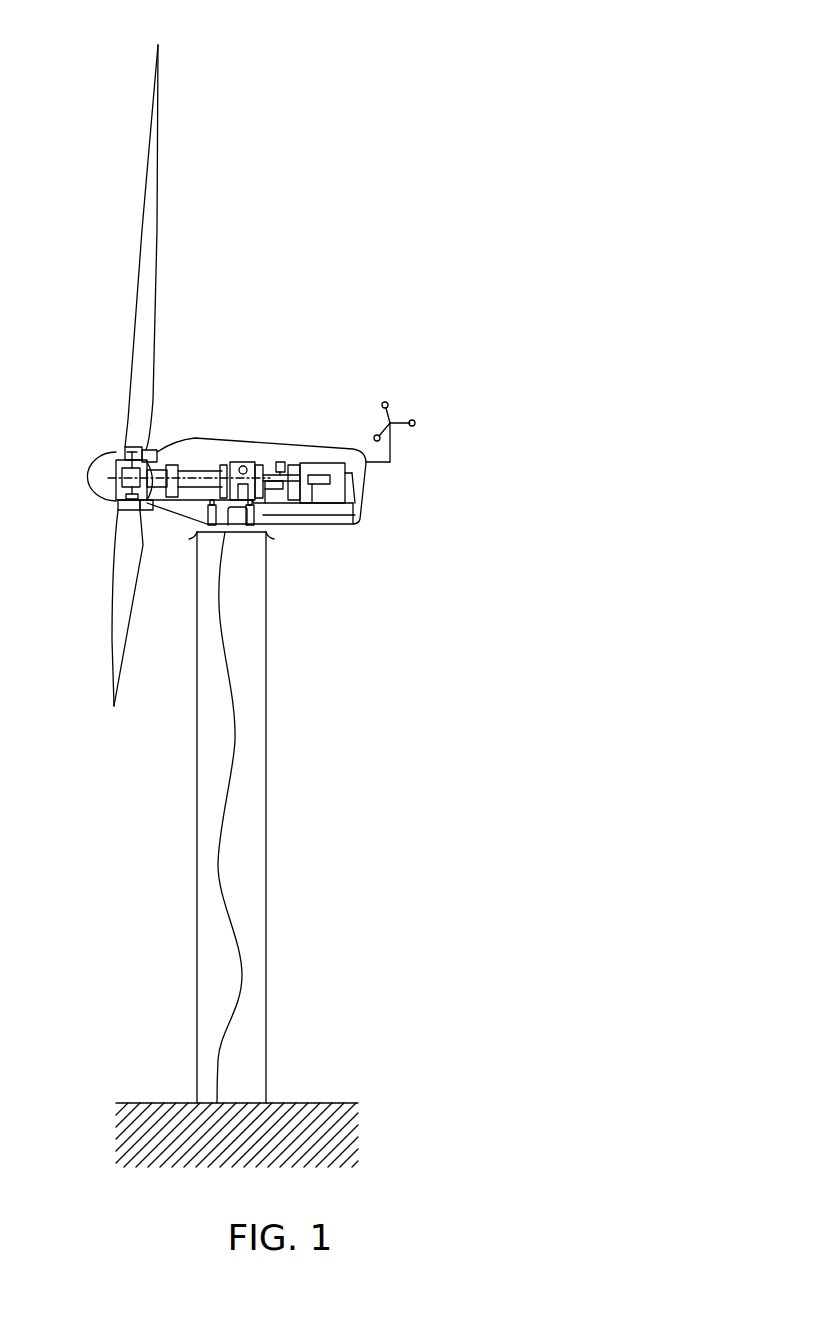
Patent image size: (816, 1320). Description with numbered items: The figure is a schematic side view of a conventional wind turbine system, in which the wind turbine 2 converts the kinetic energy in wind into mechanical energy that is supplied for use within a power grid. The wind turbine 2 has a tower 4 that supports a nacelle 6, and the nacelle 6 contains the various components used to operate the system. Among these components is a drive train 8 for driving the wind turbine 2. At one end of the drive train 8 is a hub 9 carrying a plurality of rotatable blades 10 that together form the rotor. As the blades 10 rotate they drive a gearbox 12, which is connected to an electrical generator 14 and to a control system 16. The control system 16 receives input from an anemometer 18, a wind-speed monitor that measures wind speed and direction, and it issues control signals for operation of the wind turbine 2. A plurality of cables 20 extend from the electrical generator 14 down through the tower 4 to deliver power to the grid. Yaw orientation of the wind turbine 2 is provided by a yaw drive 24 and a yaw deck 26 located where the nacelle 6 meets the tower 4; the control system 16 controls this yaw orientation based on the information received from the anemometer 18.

The wind turbine 2 is at (445, 240).
The tower 4 is at (250, 628).
The nacelle 6 is at (402, 487).
The drive train 8 is at (192, 477).
The hub 9 is at (95, 462).
The rotatable blades 10 is at (143, 310).
The gearbox 12 is at (243, 466).
The electrical generator 14 is at (325, 472).
The control system 16 is at (281, 461).
The anemometer 18 is at (408, 422).
The cables 20 is at (232, 918).
The yaw drive 24 is at (203, 527).
The yaw deck 26 is at (254, 528).